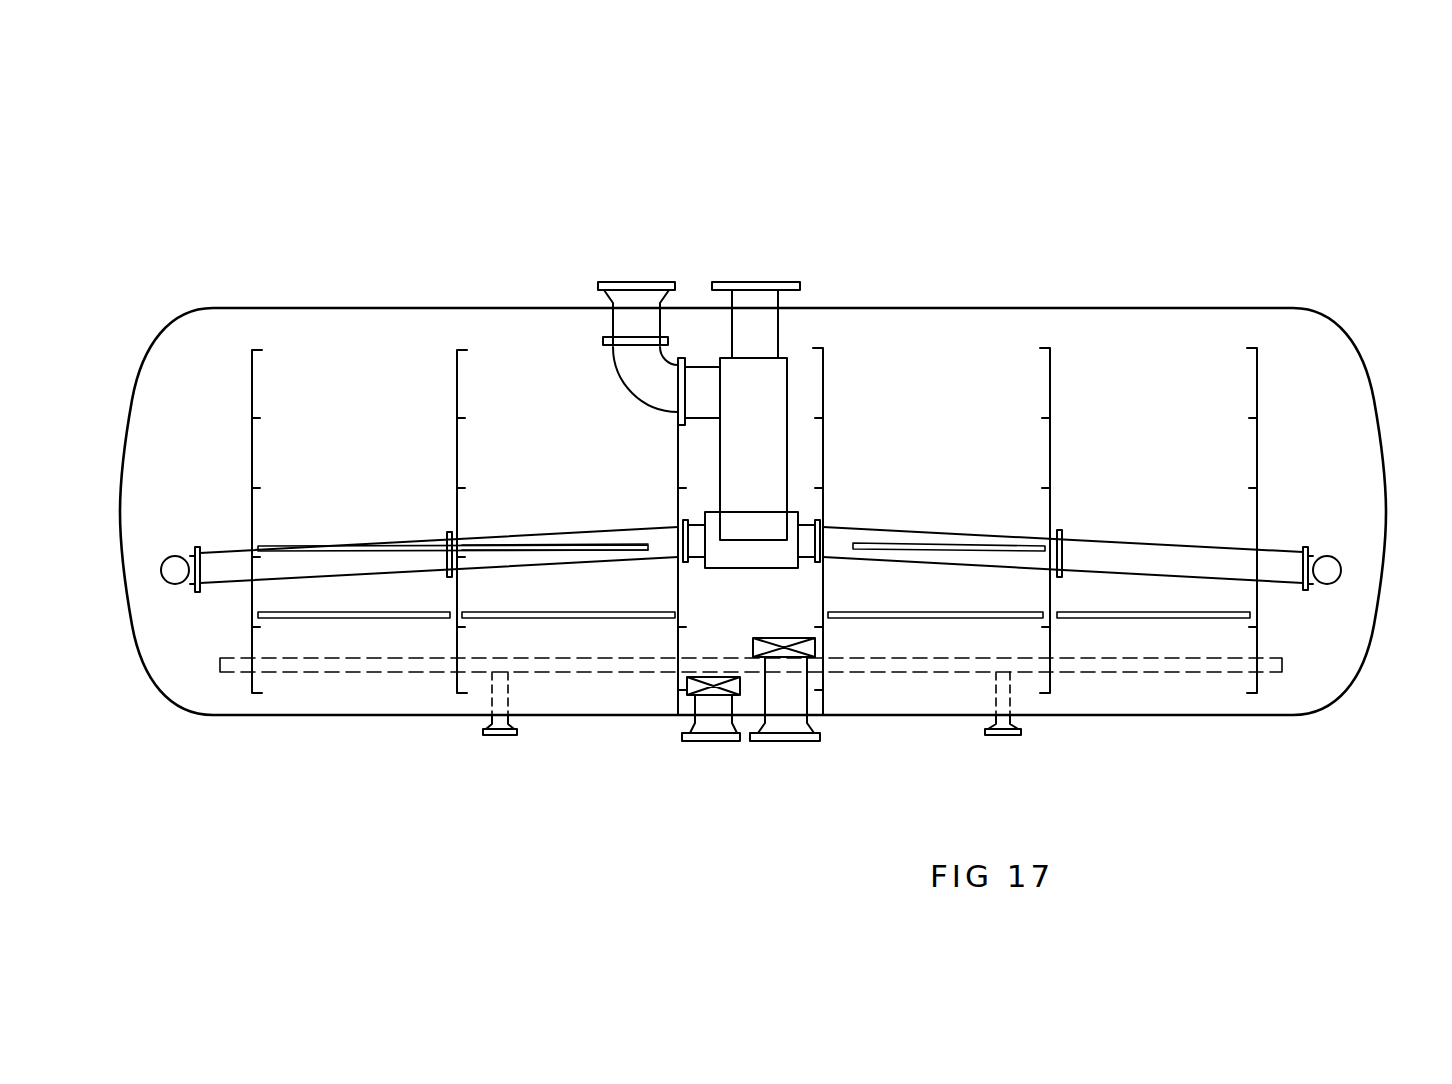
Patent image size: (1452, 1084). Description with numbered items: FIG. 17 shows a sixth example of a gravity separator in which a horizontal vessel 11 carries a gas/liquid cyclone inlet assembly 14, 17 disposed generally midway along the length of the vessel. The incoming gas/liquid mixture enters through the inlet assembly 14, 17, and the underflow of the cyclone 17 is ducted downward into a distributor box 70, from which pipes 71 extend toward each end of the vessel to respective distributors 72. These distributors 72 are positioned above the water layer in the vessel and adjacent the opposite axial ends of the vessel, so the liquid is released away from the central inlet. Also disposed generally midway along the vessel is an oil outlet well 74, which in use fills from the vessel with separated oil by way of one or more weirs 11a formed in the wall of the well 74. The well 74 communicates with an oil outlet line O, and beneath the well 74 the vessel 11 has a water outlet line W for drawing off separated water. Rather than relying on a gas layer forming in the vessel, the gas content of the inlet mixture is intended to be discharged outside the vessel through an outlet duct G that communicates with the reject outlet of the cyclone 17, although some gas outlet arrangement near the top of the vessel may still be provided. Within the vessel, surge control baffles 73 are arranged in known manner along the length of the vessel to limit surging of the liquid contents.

The vessel 11 is at (313, 718).
The weir 11a is at (920, 387).
The gas/liquid cyclone inlet assembly 14 is at (614, 282).
The cyclone 17 is at (767, 373).
The distributor box 70 is at (730, 560).
The pipe 71 is at (538, 540).
The distributor 72 is at (178, 584).
The surge control baffle 73 is at (458, 457).
The oil outlet well 74 is at (808, 470).
The outlet duct G is at (758, 282).
The water outlet line W is at (708, 745).
The oil outlet line O is at (803, 745).